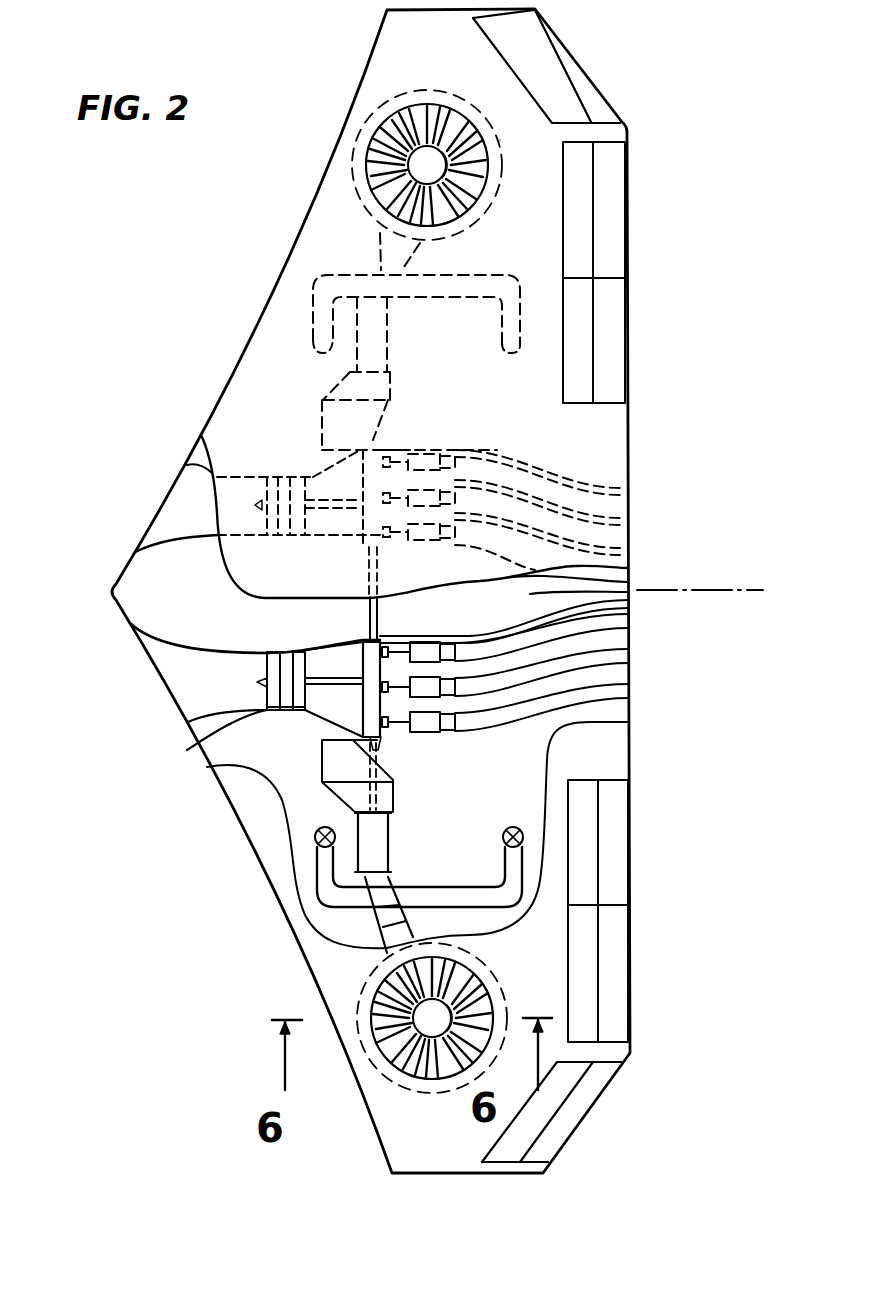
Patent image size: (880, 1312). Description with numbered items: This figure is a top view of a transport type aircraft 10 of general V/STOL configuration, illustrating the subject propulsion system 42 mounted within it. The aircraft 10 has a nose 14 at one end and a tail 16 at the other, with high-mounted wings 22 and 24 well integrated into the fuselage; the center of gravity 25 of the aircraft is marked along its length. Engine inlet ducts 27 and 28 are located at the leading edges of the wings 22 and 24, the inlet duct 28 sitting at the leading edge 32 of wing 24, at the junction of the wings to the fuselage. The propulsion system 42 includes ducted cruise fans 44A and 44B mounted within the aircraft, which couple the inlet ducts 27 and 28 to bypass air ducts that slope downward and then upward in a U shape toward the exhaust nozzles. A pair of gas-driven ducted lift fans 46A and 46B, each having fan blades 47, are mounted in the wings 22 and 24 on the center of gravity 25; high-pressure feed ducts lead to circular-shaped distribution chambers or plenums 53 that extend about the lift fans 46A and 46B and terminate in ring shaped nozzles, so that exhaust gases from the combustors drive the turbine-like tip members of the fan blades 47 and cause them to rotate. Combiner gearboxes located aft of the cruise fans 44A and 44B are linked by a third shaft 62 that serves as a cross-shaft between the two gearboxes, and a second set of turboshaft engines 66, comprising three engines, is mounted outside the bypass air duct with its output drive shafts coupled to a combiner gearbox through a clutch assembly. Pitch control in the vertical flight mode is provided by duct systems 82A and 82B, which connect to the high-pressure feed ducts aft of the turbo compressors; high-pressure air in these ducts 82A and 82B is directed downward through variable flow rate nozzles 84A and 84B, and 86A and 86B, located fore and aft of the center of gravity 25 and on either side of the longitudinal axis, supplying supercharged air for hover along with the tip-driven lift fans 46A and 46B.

The aircraft 10 is at (220, 946).
The nose 14 is at (110, 593).
The tail 16 is at (629, 675).
The wing 22 is at (382, 80).
The wing 24 is at (442, 1176).
The center of gravity 25 is at (680, 590).
The engine inlet duct 27 is at (178, 476).
The engine inlet duct 28 is at (162, 657).
The leading edge 32 is at (188, 727).
The propulsion system 42 is at (548, 498).
The ducted cruise fan 44A is at (263, 477).
The ducted cruise fan 44B is at (207, 767).
The gas-driven ducted lift fan 46A is at (494, 149).
The gas-driven ducted lift fan 46B is at (500, 995).
The fan blades 47 is at (372, 165).
The distribution chamber or plenum 53 is at (365, 990).
The third shaft 62 is at (380, 612).
The second set of turboshaft engines 66 is at (452, 744).
The duct system 82A is at (362, 270).
The duct system 82B is at (364, 925).
The variable flow rate nozzle 84A is at (315, 347).
The variable flow rate nozzle 84B is at (315, 843).
The variable flow rate nozzle 86A is at (522, 347).
The variable flow rate nozzle 86B is at (523, 838).